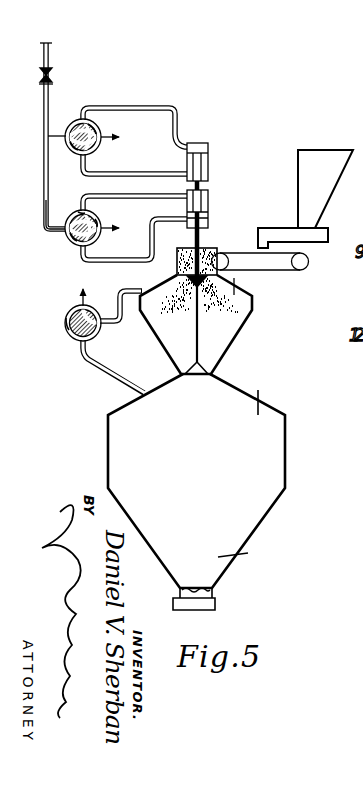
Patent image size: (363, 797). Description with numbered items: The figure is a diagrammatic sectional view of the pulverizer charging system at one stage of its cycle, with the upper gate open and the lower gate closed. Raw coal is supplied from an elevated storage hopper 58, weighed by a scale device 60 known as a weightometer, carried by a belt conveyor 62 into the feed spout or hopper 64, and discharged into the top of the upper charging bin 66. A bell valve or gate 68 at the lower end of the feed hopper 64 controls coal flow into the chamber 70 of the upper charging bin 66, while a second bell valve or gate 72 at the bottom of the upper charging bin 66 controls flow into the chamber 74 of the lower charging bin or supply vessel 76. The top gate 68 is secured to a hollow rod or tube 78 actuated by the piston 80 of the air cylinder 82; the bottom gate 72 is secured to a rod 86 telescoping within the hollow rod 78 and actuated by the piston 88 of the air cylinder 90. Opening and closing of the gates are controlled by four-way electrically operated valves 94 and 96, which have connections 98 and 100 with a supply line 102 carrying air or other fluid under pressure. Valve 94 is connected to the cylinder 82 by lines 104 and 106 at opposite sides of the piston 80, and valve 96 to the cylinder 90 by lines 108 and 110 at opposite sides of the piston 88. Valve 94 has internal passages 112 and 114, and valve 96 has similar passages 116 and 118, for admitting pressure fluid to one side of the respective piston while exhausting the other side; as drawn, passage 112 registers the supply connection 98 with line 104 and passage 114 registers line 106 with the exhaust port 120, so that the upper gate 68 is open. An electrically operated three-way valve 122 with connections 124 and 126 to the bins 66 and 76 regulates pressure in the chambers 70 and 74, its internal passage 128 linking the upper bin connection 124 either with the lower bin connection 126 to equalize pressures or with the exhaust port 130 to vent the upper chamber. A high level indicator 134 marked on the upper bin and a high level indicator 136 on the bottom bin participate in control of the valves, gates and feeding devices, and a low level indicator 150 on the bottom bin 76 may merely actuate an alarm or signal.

The elevated storage hopper 58 is at (327, 185).
The scale device 60 is at (270, 227).
The belt conveyor 62 is at (296, 270).
The feed spout or hopper 64 is at (177, 257).
The upper charging bin 66 is at (231, 348).
The bell valve or gate 68 is at (196, 284).
The chamber 70 is at (222, 343).
The bell valve or gate 72 is at (214, 363).
The chamber 74 is at (205, 485).
The lower charging bin 76 is at (286, 462).
The hollow rod or tube 78 is at (201, 240).
The piston 80 is at (208, 222).
The air cylinder 82 is at (208, 197).
The rod 86 is at (196, 328).
The piston 88 is at (208, 148).
The air cylinder 90 is at (208, 163).
The four-way electrically operated valve 94 is at (101, 239).
The four-way electrically operated valve 96 is at (97, 147).
The connection 98 is at (48, 233).
The connection 100 is at (50, 132).
The supply line 102 is at (50, 56).
The line 104 is at (118, 198).
The line 106 is at (102, 266).
The line 108 is at (135, 106).
The line 110 is at (122, 179).
The internal passage 112 is at (77, 213).
The internal passage 114 is at (73, 247).
The internal passage 116 is at (98, 128).
The internal passage 118 is at (72, 151).
The exhaust port 120 is at (103, 228).
The electrically operated three-way valve 122 is at (70, 341).
The connection 124 is at (146, 287).
The connection 126 is at (106, 376).
The internal passage 128 is at (65, 321).
The exhaust port 130 is at (86, 289).
The high level top 134 is at (236, 287).
The high level indicator 136 is at (261, 398).
The low level indicator 150 is at (245, 556).